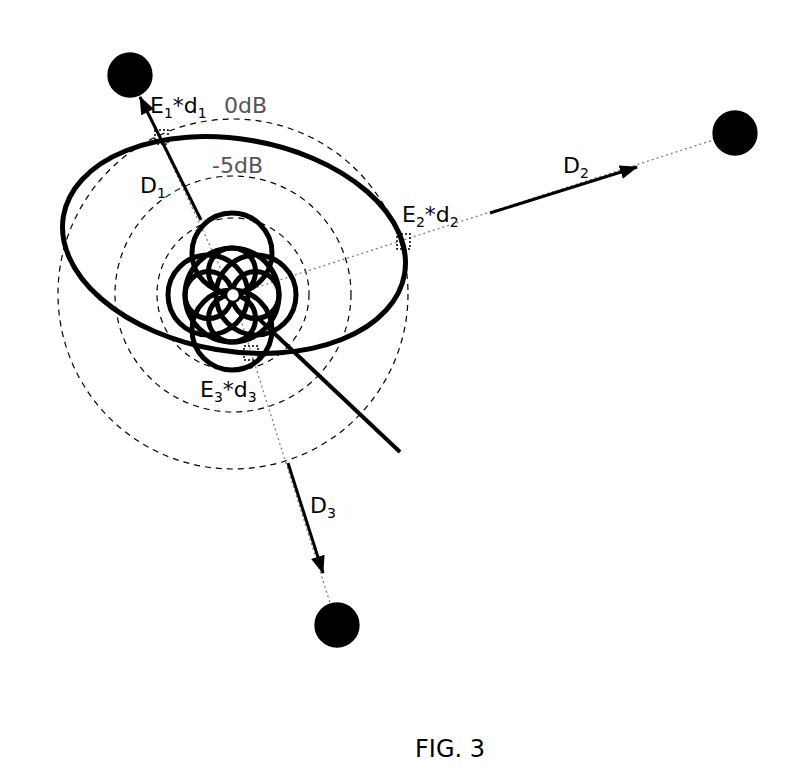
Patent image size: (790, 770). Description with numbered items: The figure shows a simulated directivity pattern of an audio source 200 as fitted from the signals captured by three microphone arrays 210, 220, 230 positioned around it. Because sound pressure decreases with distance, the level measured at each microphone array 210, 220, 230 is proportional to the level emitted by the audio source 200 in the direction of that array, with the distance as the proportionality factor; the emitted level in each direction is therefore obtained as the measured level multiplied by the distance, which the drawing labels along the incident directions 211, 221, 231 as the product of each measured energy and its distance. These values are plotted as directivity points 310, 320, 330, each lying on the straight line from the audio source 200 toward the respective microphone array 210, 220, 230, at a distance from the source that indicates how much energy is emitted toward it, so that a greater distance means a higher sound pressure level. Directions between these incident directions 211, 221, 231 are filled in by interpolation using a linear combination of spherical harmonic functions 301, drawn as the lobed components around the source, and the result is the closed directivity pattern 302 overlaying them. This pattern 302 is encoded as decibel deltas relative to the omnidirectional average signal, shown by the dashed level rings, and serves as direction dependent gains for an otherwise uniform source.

The audio source 200 is at (241, 295).
The microphone array 210 is at (151, 74).
The direction D1 211 is at (138, 103).
The microphone array 220 is at (715, 126).
The direction D2 221 is at (538, 197).
The microphone array 230 is at (360, 618).
The direction D3 231 is at (310, 548).
The spherical harmonic components 301 is at (349, 401).
The directivity pattern 302 is at (352, 192).
The directivity point 310 is at (158, 136).
The directivity point 320 is at (411, 243).
The directivity point 330 is at (246, 362).